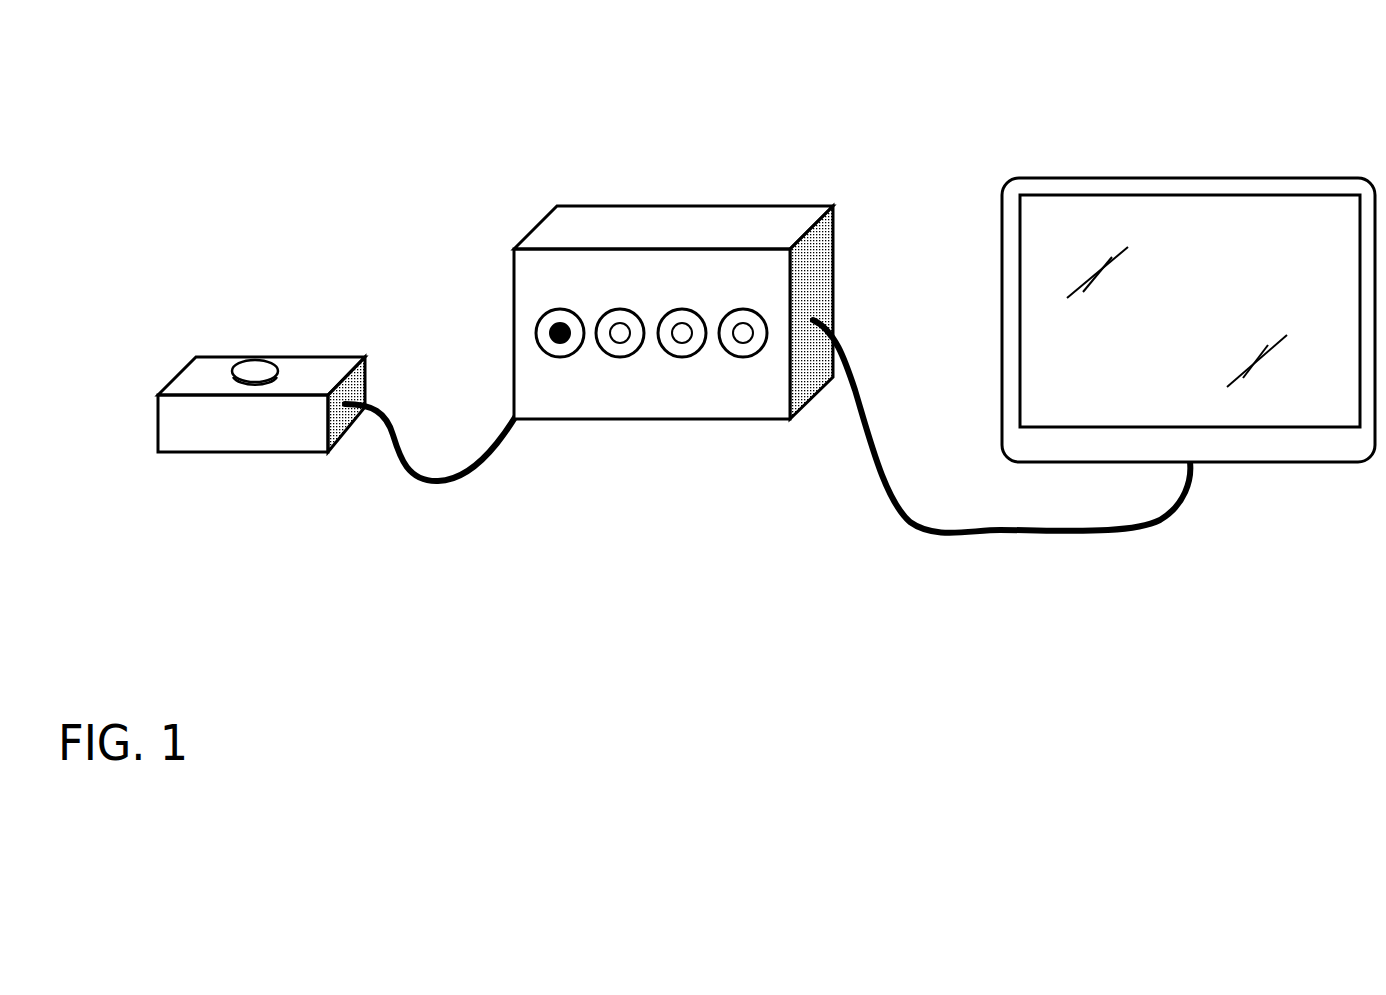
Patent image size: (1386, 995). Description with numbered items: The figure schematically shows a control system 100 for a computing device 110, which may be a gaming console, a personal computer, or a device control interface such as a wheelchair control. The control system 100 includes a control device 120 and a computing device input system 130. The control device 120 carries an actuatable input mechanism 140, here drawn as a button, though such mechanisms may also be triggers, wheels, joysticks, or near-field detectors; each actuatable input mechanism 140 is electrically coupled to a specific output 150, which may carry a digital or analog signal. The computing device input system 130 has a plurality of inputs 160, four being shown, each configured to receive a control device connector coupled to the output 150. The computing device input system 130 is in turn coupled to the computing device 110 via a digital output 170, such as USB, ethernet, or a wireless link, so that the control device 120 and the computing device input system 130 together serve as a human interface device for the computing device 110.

The control system 100 is at (240, 93).
The computing device 110 is at (1159, 140).
The control device 120 is at (214, 316).
The computing device input system 130 is at (625, 171).
The actuatable input mechanism 140 is at (264, 347).
The output 150 is at (430, 503).
The inputs 160 is at (727, 296).
The digital output 170 is at (920, 502).